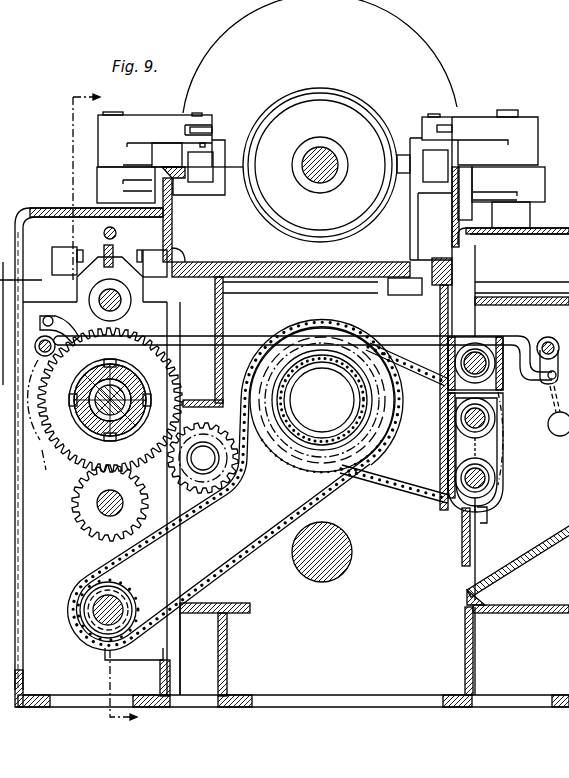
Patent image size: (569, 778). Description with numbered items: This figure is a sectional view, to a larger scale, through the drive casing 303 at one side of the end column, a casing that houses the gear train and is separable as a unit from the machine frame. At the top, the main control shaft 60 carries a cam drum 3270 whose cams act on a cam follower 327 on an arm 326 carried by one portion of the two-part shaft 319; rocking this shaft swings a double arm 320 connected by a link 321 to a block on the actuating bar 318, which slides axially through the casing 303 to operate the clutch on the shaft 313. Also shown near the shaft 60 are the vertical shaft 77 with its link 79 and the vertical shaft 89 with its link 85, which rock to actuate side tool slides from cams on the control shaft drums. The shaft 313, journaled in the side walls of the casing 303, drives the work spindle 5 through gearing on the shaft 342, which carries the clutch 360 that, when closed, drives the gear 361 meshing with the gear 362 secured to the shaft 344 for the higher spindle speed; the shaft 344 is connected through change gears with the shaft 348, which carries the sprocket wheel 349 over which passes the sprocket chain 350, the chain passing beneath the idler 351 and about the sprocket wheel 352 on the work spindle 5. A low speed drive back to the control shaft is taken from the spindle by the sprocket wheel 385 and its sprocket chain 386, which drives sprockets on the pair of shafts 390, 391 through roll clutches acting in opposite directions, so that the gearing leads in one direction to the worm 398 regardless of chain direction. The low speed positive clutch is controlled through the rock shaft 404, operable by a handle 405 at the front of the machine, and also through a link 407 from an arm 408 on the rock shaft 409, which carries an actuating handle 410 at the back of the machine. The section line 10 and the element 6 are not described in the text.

The section line 10- 10 is at (94, 404).
The vertical shaft 77 is at (133, 115).
The link 79 is at (203, 124).
The drum 3270 is at (350, 98).
The main control shaft 60 is at (321, 158).
The cam follower 327 is at (405, 153).
The link 85 is at (438, 128).
The vertical shaft 89 is at (508, 110).
The casing 303 is at (47, 208).
The actuating bar 318 is at (110, 218).
The link 321 is at (112, 262).
The double arm 320 is at (88, 257).
The two-part shaft 319 is at (252, 287).
The arm 326 is at (411, 220).
The arm 408 is at (43, 320).
The shaft 313 is at (123, 305).
The link 407 is at (197, 343).
The sprocket wheel 385 is at (373, 332).
The sprocket chain 386 is at (423, 362).
The worm 398 is at (479, 350).
The rock shaft 404 is at (549, 346).
The handle 405 is at (552, 407).
The rock shaft 409 is at (55, 364).
The clutch 360 is at (78, 411).
The shaft 342 is at (99, 433).
The work spindle 5 is at (362, 405).
The shaft 390 is at (465, 422).
The shaft 391 is at (465, 480).
The actuating handle 410 is at (46, 421).
The gear 361 is at (83, 452).
The shaft 344 is at (97, 503).
The gear 362 is at (83, 522).
The sprocket wheel 349 is at (105, 570).
The idler 351 is at (233, 481).
The sprocket chain 350 is at (210, 510).
The sprocket wheel 352 is at (315, 467).
The shaft 348 is at (85, 633).
The shaft 6 is at (320, 570).